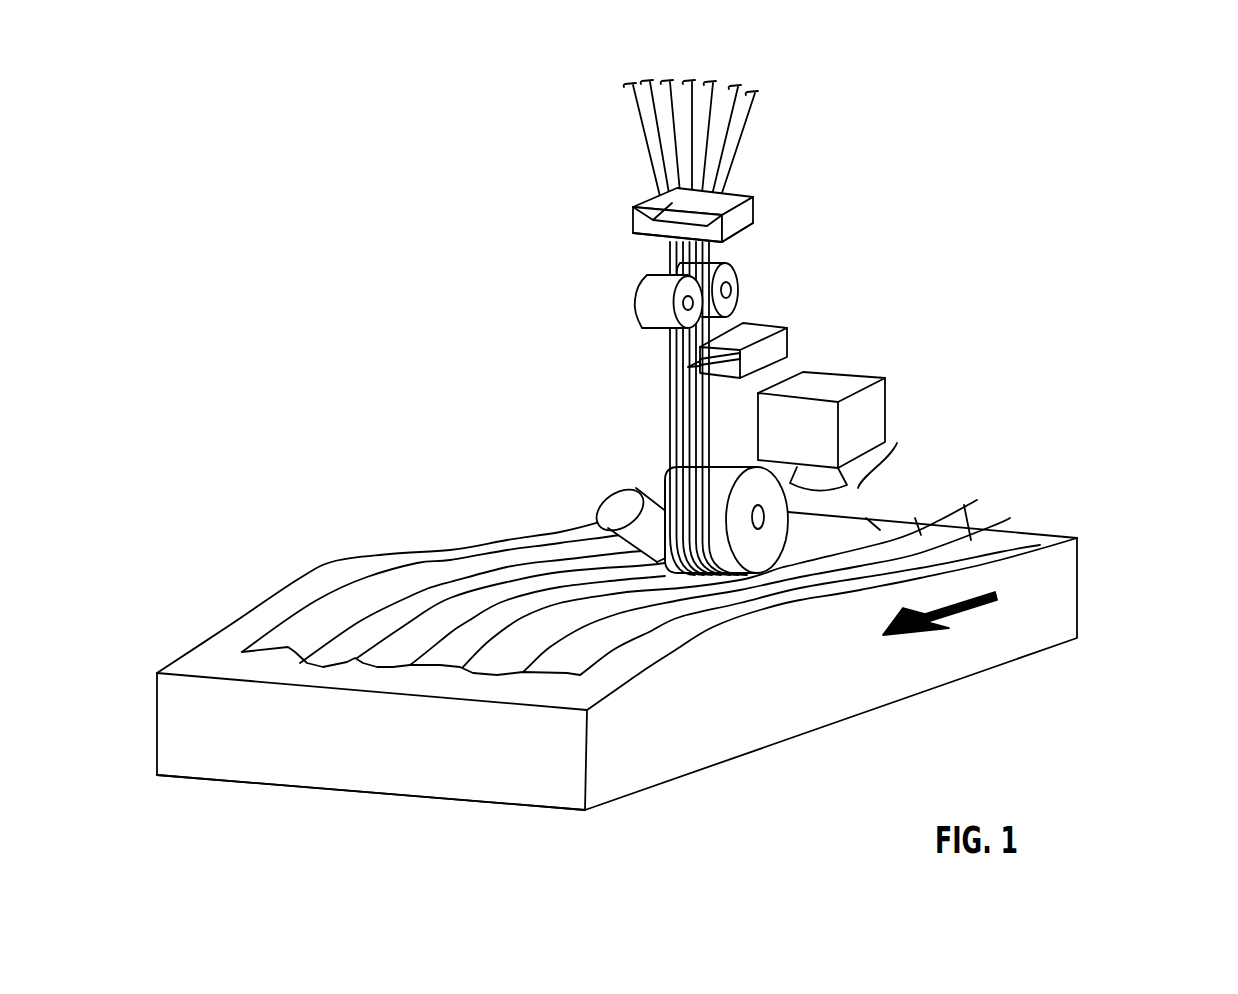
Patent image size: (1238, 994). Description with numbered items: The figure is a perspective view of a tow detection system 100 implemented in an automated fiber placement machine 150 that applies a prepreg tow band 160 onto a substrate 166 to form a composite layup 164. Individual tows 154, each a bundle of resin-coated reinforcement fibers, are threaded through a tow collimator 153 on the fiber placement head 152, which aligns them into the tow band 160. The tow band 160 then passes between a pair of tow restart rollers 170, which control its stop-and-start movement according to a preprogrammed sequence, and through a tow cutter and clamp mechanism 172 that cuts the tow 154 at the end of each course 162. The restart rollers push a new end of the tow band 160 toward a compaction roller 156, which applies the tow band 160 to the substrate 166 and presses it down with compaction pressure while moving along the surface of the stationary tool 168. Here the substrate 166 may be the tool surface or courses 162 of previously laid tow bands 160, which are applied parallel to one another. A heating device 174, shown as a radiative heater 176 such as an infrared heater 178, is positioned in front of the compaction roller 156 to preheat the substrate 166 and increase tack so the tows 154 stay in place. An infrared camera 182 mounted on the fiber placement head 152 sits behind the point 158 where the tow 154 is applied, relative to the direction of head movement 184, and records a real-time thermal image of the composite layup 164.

The tow detection system 100 is at (858, 488).
The automated fiber placement machine 150 is at (879, 123).
The fiber placement head 152 is at (753, 203).
The tow collimator 153 is at (752, 222).
The tows 154 is at (692, 148).
The compaction roller 156 is at (660, 480).
The point 158 is at (777, 557).
The tow band 160 is at (668, 398).
The courses 162 is at (673, 553).
The composite layup 164 is at (975, 568).
The substrate 166 is at (248, 627).
The tool 168 is at (693, 775).
The tow restart rollers 170 is at (645, 292).
The tow cutter and clamp mechanism 172 is at (777, 328).
The heating device 174 is at (600, 508).
The radiative heater 176 is at (610, 490).
The infrared heater 178 is at (600, 520).
The infrared camera 182 is at (887, 412).
The direction of head movement 184 is at (966, 612).